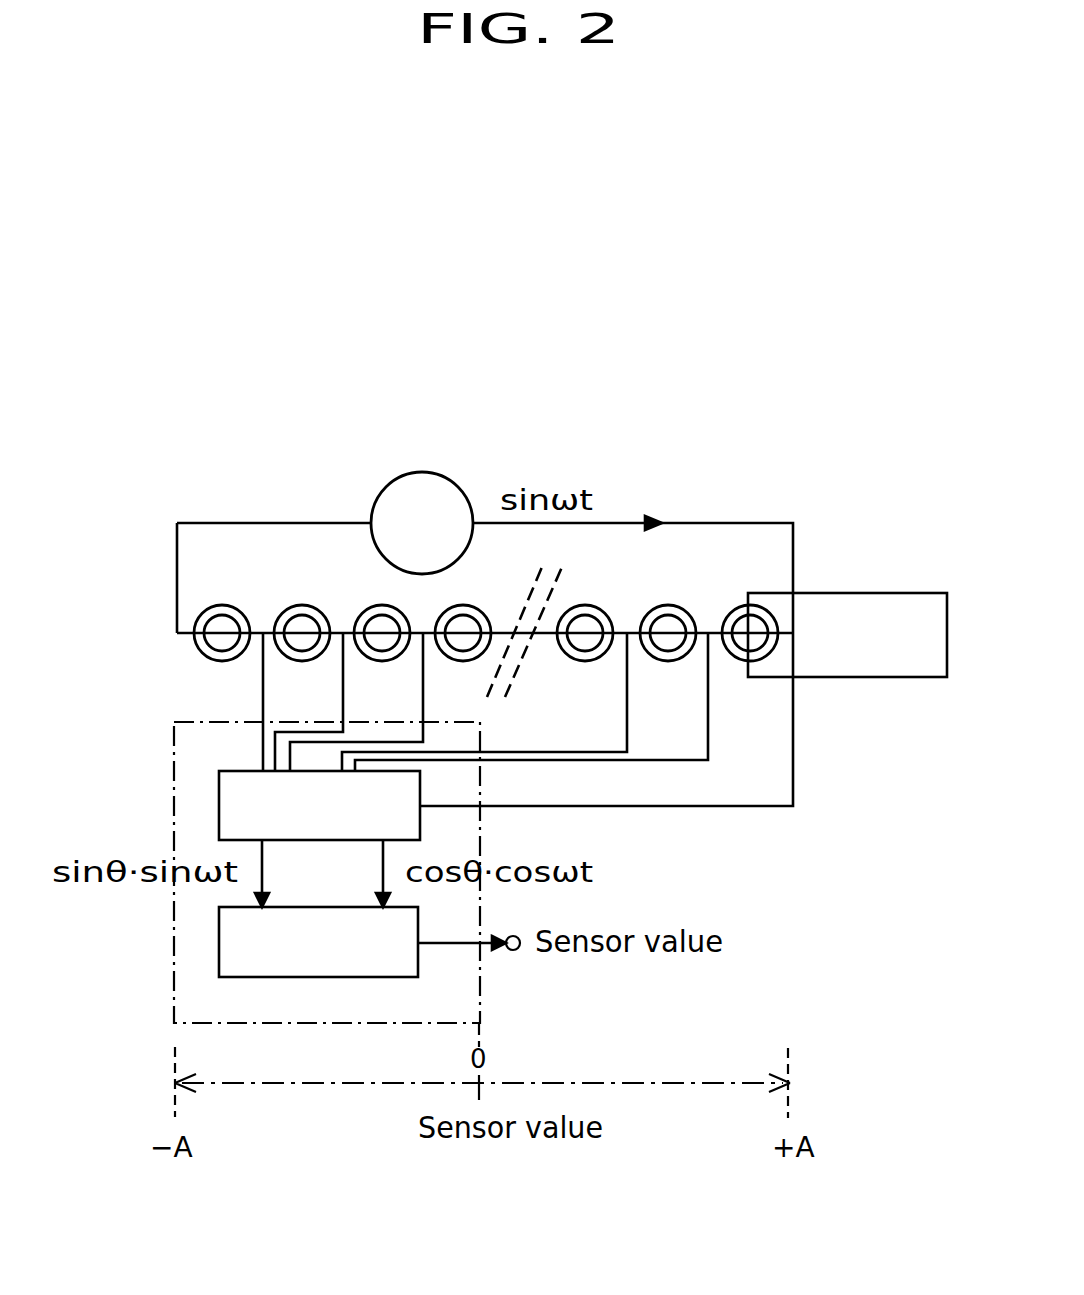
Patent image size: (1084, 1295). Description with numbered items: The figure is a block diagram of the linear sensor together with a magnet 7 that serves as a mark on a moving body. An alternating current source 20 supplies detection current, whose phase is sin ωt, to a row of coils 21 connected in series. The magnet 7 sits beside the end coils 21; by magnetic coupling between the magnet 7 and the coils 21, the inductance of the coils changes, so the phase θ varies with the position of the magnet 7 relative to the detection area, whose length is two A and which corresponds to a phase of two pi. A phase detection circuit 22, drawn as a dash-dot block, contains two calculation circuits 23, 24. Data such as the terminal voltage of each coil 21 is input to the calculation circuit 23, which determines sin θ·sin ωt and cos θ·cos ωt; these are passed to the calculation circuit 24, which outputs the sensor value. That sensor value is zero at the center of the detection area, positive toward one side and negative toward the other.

The magnet 7 is at (897, 660).
The alternating current source 20 is at (437, 474).
The coils 21 is at (289, 612).
The phase detection circuit 22 is at (480, 828).
The calculation circuit 23 is at (232, 805).
The calculation circuit 24 is at (232, 950).